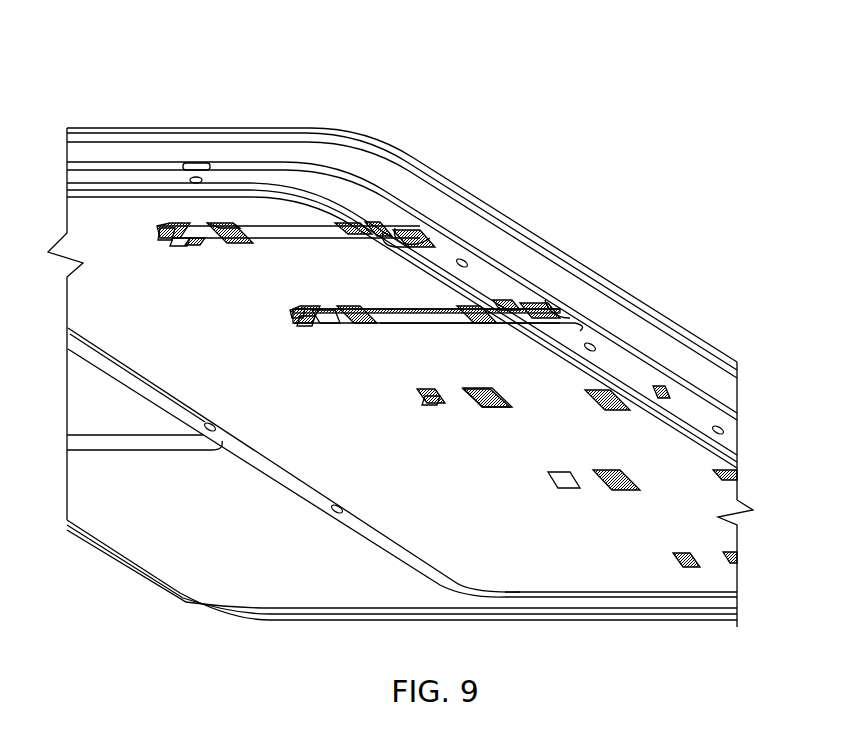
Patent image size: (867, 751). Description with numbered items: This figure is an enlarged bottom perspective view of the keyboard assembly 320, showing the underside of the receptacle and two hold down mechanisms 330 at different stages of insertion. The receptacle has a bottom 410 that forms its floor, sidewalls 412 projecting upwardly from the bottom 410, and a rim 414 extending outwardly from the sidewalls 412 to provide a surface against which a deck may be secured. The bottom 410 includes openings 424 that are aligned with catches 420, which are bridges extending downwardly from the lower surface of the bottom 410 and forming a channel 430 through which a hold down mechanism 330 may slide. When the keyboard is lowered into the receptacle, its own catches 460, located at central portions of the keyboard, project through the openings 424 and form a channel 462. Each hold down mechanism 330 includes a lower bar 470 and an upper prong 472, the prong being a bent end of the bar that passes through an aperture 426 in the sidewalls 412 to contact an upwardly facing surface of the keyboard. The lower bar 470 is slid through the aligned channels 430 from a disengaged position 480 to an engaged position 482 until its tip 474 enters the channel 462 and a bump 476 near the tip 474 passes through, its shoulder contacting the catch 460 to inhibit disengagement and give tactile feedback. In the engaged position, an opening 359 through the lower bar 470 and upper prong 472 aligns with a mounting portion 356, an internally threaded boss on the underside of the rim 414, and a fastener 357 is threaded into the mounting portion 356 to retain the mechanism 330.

The keyboard assembly 320 is at (293, 103).
The bottom 410 is at (507, 570).
The sidewalls 412 is at (250, 190).
The rim 414 is at (415, 562).
The catches 420 is at (240, 243).
The openings 424 is at (423, 390).
The apertures 426 is at (355, 222).
The channel 430 is at (507, 399).
The hold down mechanism 330 is at (417, 328).
The mounting portion 356 is at (403, 227).
The fastener 357 is at (400, 243).
The opening 359 is at (547, 303).
The catches 460 is at (180, 240).
The channel 462 is at (290, 310).
The lower bar 470 is at (248, 227).
The upper prong 472 is at (383, 225).
The tip 474 is at (160, 228).
The bump 476 is at (320, 327).
The disengaged position 480 is at (384, 306).
The engaged position 482 is at (199, 248).